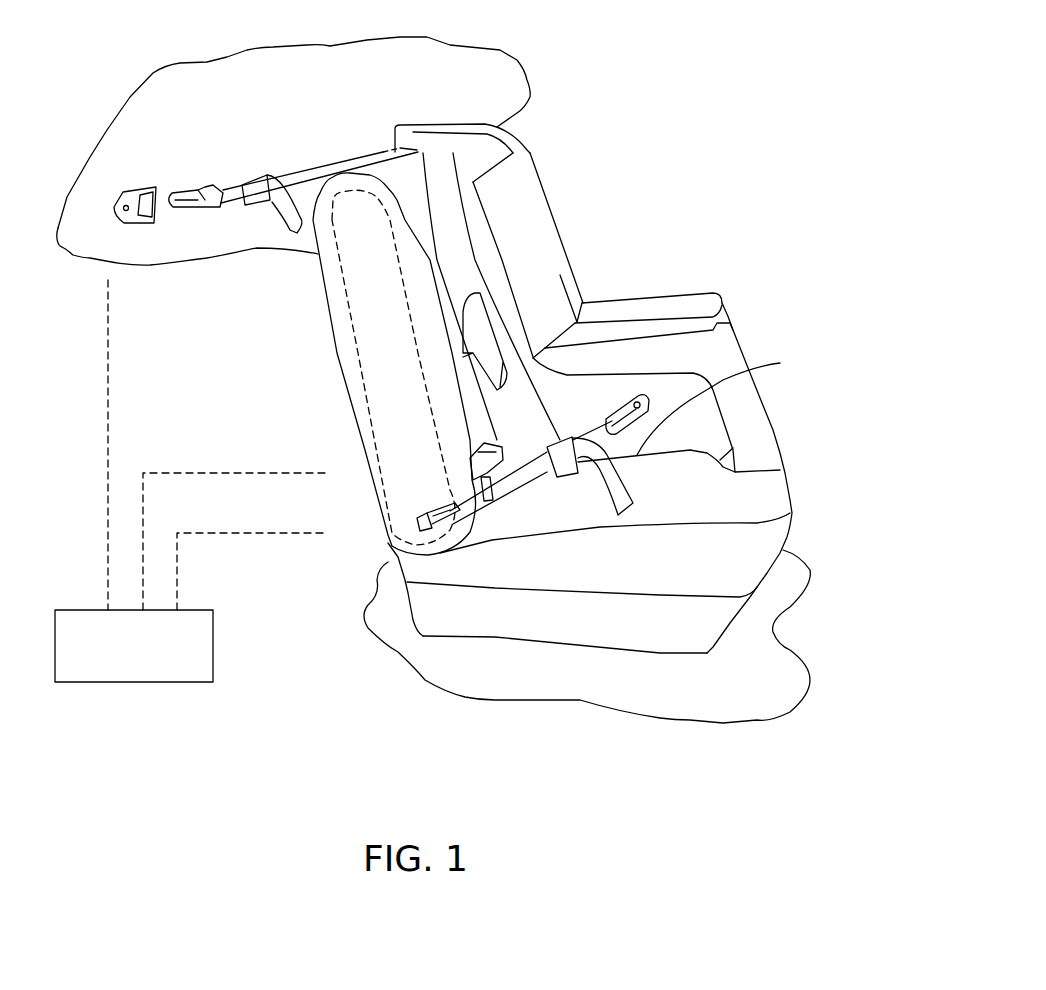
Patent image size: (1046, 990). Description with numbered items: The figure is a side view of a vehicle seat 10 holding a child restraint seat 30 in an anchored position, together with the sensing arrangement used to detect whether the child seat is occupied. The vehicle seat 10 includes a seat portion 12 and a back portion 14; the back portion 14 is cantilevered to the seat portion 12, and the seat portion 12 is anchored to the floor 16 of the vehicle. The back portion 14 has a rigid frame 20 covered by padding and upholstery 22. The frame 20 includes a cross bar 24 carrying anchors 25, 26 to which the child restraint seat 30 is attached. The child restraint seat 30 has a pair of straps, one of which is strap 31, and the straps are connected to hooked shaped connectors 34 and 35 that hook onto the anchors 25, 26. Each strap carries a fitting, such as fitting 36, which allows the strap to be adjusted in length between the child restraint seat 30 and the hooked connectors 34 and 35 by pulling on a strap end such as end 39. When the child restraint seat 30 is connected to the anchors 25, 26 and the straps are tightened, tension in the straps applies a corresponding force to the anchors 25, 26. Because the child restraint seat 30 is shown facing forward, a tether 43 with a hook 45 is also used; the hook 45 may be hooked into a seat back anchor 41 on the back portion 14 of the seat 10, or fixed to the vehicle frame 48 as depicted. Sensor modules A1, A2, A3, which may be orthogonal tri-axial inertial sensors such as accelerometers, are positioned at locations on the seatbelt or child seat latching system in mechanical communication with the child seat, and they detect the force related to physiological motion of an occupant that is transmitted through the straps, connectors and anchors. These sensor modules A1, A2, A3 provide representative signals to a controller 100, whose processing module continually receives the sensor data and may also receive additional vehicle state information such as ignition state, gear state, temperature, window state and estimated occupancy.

The vehicle seat 10 is at (793, 513).
The seat portion 12 is at (577, 517).
The back portion 14 is at (320, 257).
The floor 16 is at (680, 712).
The rigid frame 20 is at (373, 292).
The padding and upholstery 22 is at (385, 162).
The cross bar 24 is at (390, 542).
The anchor 25 is at (433, 510).
The anchor 26 is at (473, 445).
The child restraint seat 30 is at (563, 227).
The strap 31 is at (590, 608).
The hooked shaped connector 34 is at (470, 510).
The hooked shaped connector 35 is at (530, 485).
The fitting 36 is at (570, 463).
The strap end 39 is at (617, 490).
The seat back anchor 41 is at (121, 223).
The tether 43 is at (318, 166).
The hook 45 is at (197, 193).
The vehicle frame 48 is at (512, 72).
The controller 100 is at (127, 668).
The sensor module A1 is at (110, 342).
The sensor module A2 is at (230, 533).
The sensor module A3 is at (250, 473).